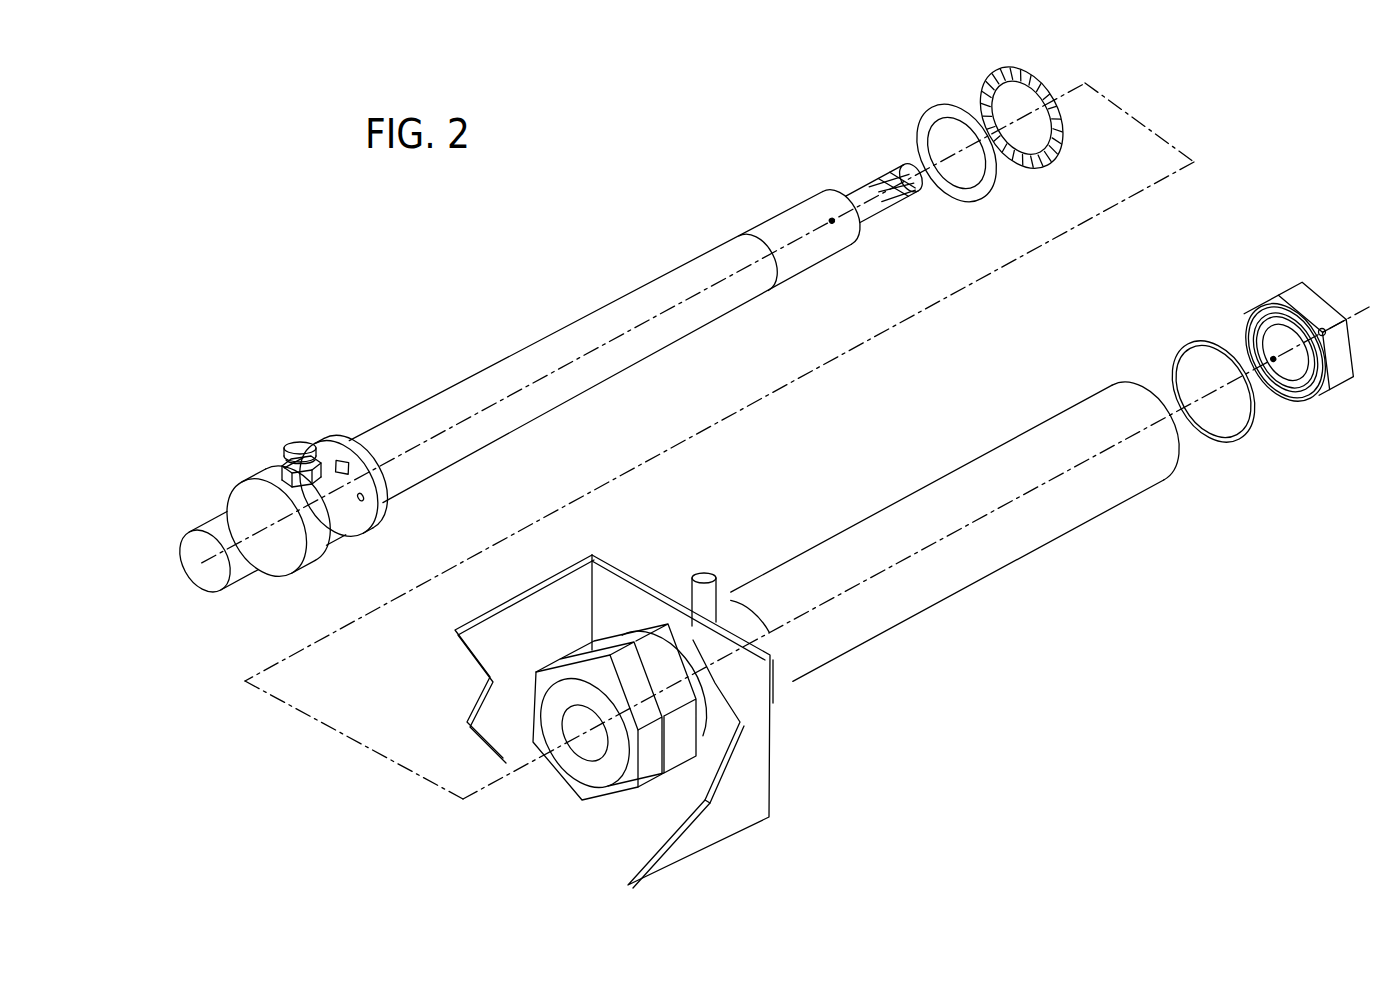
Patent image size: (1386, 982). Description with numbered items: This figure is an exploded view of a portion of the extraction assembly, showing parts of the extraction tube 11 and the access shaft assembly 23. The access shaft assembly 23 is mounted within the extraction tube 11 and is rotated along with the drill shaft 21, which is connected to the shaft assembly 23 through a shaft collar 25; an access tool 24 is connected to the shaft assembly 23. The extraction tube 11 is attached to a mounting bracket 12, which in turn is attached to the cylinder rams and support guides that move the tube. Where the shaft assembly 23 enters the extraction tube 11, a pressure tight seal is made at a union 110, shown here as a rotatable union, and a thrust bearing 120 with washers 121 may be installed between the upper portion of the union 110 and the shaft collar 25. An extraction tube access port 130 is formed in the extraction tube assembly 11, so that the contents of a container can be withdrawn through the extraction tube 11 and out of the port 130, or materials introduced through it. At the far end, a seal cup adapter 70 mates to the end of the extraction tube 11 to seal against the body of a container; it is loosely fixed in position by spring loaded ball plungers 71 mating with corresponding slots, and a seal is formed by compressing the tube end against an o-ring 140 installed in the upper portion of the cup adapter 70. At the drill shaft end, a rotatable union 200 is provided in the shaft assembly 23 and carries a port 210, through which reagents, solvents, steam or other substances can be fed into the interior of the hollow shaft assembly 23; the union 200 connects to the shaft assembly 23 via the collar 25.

The extraction tube 11 is at (970, 590).
The mounting bracket 12 is at (752, 829).
The drill shaft 21 is at (215, 524).
The access shaft assembly 23 is at (553, 330).
The access tool 24 is at (880, 185).
The shaft collar 25 is at (327, 442).
The seal cup adapter 70 is at (1320, 398).
The spring loaded ball plunger 71 is at (1324, 329).
The union 110 is at (602, 813).
The thrust bearing 120 is at (1013, 66).
The washer 121 is at (945, 108).
The extraction tube access port 130 is at (708, 576).
The o-ring 140 is at (1226, 440).
The rotatable union 200 is at (315, 574).
The port 210 is at (291, 449).